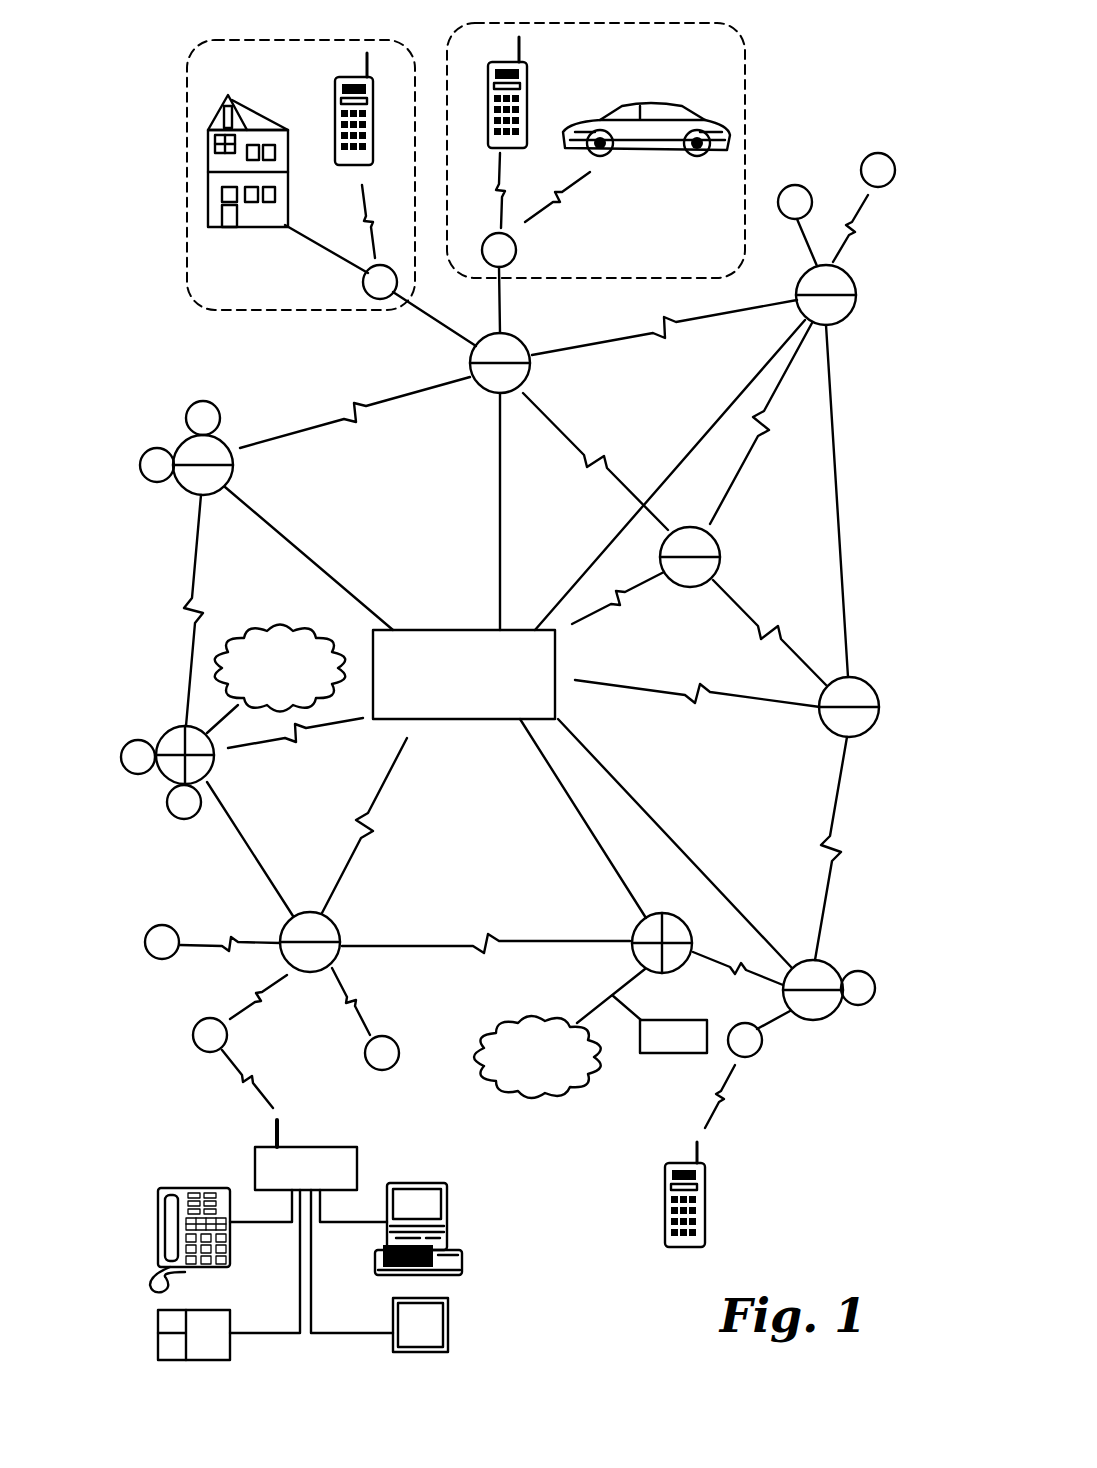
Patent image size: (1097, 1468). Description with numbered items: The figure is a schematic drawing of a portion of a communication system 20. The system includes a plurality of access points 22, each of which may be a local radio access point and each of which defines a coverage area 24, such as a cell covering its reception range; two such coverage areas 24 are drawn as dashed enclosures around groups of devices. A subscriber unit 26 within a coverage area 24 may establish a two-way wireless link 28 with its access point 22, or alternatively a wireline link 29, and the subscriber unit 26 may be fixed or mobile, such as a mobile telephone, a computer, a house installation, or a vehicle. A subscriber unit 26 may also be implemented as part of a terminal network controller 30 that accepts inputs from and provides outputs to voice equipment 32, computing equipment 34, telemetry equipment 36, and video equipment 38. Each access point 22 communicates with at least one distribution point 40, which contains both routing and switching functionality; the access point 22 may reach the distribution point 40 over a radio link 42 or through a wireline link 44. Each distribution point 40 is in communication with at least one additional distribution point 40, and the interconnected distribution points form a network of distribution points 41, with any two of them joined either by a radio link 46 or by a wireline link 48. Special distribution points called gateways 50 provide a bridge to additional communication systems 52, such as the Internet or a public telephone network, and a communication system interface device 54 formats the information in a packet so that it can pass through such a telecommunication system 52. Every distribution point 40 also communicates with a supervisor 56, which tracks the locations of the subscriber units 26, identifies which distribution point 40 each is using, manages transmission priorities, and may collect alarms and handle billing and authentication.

The communication system 20 is at (815, 97).
The access point 22 is at (372, 298).
The coverage area 24 is at (185, 100).
The subscriber unit 26 is at (335, 102).
The two-way wireless link 28 is at (362, 218).
The wireline link 29 is at (330, 250).
The terminal network controller 30 is at (327, 1145).
The voice equipment 32 is at (155, 1233).
The computing equipment 34 is at (447, 1210).
The telemetry equipment 36 is at (158, 1338).
The video equipment 38 is at (450, 1330).
The distribution point 40 is at (856, 298).
The network of distribution points 41 is at (195, 362).
The radio link 42 is at (258, 997).
The wireline link 44 is at (500, 298).
The radio link 46 is at (345, 418).
The wireline link 48 is at (838, 490).
The gateway 50 is at (170, 728).
The additional communication system 52 is at (290, 628).
The communication system interface device 54 is at (668, 1053).
The supervisor 56 is at (450, 630).